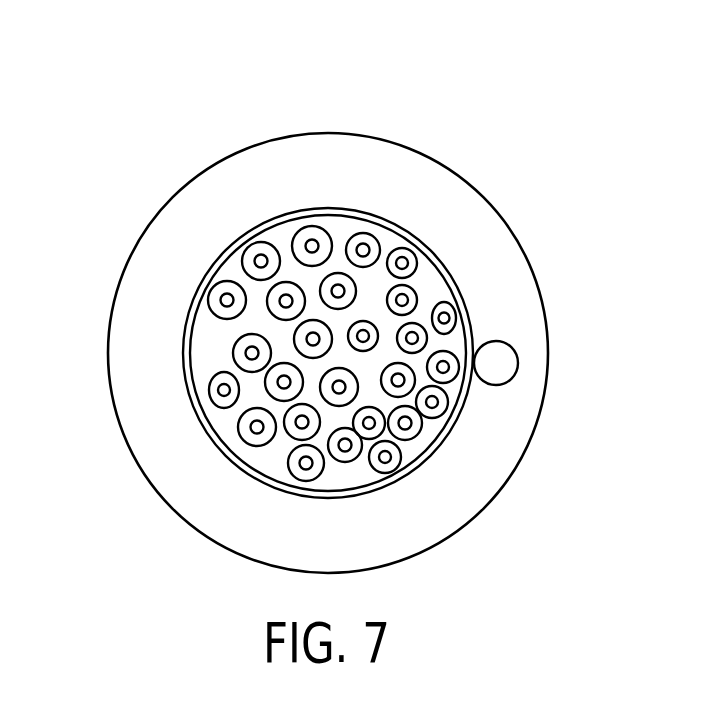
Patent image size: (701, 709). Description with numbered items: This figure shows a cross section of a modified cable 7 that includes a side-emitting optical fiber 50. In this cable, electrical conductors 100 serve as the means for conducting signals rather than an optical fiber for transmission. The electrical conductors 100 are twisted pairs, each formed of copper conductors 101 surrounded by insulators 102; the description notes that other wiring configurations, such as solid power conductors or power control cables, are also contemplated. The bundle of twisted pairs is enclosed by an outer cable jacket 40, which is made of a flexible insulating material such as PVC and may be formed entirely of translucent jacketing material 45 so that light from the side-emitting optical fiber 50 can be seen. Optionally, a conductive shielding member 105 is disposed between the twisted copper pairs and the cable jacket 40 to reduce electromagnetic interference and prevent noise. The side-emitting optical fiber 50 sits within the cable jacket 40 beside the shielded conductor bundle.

The modified cable 7 is at (328, 306).
The cable jacket 40 is at (178, 192).
The translucent jacketing material 45 is at (304, 353).
The conductive shielding member 105 is at (322, 217).
The electrical conductors 100 is at (417, 262).
The copper conductors 101 is at (224, 300).
The insulators 102 is at (247, 355).
The side-emitting optical fiber 50 is at (517, 363).